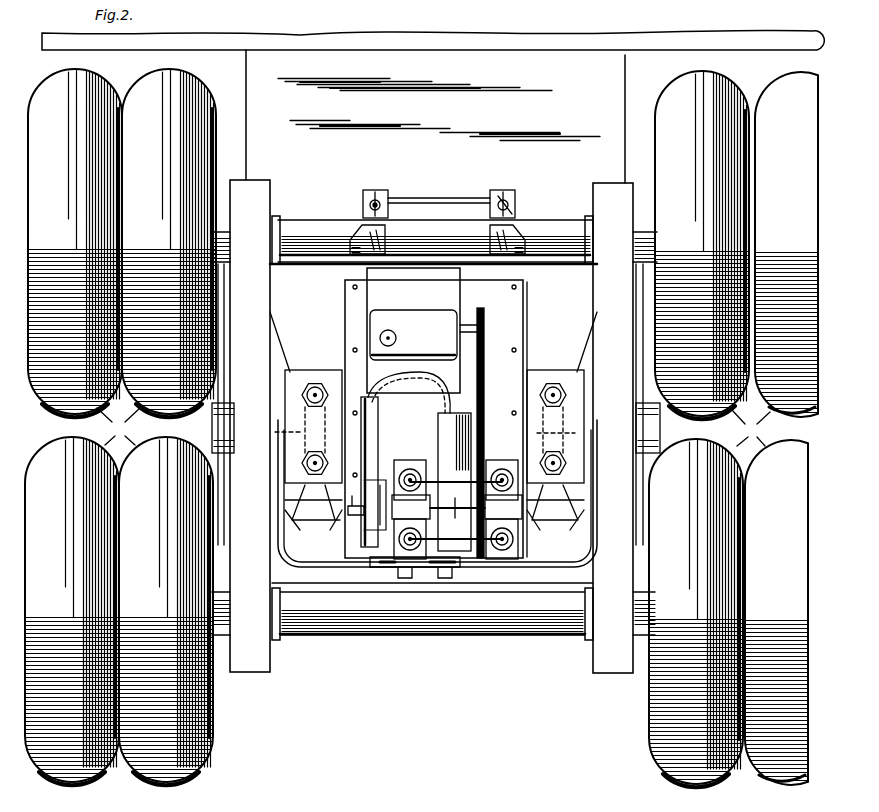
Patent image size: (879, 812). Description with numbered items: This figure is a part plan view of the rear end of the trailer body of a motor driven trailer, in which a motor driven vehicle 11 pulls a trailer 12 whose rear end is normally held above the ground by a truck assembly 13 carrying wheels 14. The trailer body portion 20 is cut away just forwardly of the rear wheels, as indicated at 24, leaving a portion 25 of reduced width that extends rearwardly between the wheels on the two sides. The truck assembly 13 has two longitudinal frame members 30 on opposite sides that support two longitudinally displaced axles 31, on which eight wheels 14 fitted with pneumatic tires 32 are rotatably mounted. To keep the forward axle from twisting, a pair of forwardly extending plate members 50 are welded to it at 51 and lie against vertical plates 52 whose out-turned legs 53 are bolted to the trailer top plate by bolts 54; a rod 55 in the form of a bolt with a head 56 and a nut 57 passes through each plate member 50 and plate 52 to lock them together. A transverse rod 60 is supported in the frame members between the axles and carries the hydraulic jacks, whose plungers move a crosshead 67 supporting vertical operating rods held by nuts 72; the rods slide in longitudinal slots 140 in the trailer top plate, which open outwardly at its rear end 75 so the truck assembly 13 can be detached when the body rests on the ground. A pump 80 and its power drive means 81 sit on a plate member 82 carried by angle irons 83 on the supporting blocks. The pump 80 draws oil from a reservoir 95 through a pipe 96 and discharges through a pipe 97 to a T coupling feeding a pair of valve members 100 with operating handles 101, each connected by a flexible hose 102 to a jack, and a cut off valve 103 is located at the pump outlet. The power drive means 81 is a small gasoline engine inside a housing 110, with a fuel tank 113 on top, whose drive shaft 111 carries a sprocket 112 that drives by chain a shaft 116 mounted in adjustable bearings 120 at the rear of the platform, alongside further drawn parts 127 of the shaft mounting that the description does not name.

The motor driven vehicle 11 is at (250, 6).
The trailer 12 is at (439, 70).
The truck assembly 13 is at (442, 660).
The wheels 14 is at (677, 6).
The body portion 20 is at (408, 38).
The cut away 24 is at (137, 52).
The portion of reduced width 25 is at (252, 72).
The frame members 30 is at (262, 672).
The axles 31 is at (294, 224).
The pneumatic tires 32 is at (433, 427).
The plate members 50 is at (372, 232).
The weld 51 is at (390, 246).
The vertical plates 52 is at (387, 192).
The out-turned legs 53 is at (377, 192).
The bolts 54 is at (391, 208).
The rod 55 is at (432, 197).
The head 56 is at (366, 205).
The nut 57 is at (506, 202).
The rod 60 is at (660, 433).
The crosshead 67 is at (313, 372).
The nuts 72 is at (290, 394).
The rear end 75 is at (290, 525).
The pump 80 is at (379, 430).
The power drive means 81 is at (490, 406).
The plate member 82 is at (515, 302).
The angle iron 83 is at (530, 320).
The reservoir 95 is at (440, 447).
The pipe 96 is at (448, 400).
The pipe 97 is at (384, 562).
The valve members 100 is at (445, 578).
The operating handles 101 is at (280, 540).
The flexible hose 102 is at (340, 568).
The cut off valve 103 is at (290, 500).
The housing 110 is at (457, 293).
The drive shaft 111 is at (476, 330).
The sprocket 112 is at (486, 348).
The fuel tank 113 is at (407, 320).
The shaft 116 is at (456, 510).
The bearings 120 is at (457, 507).
The roller 127 is at (456, 508).
The slots 140 is at (274, 436).